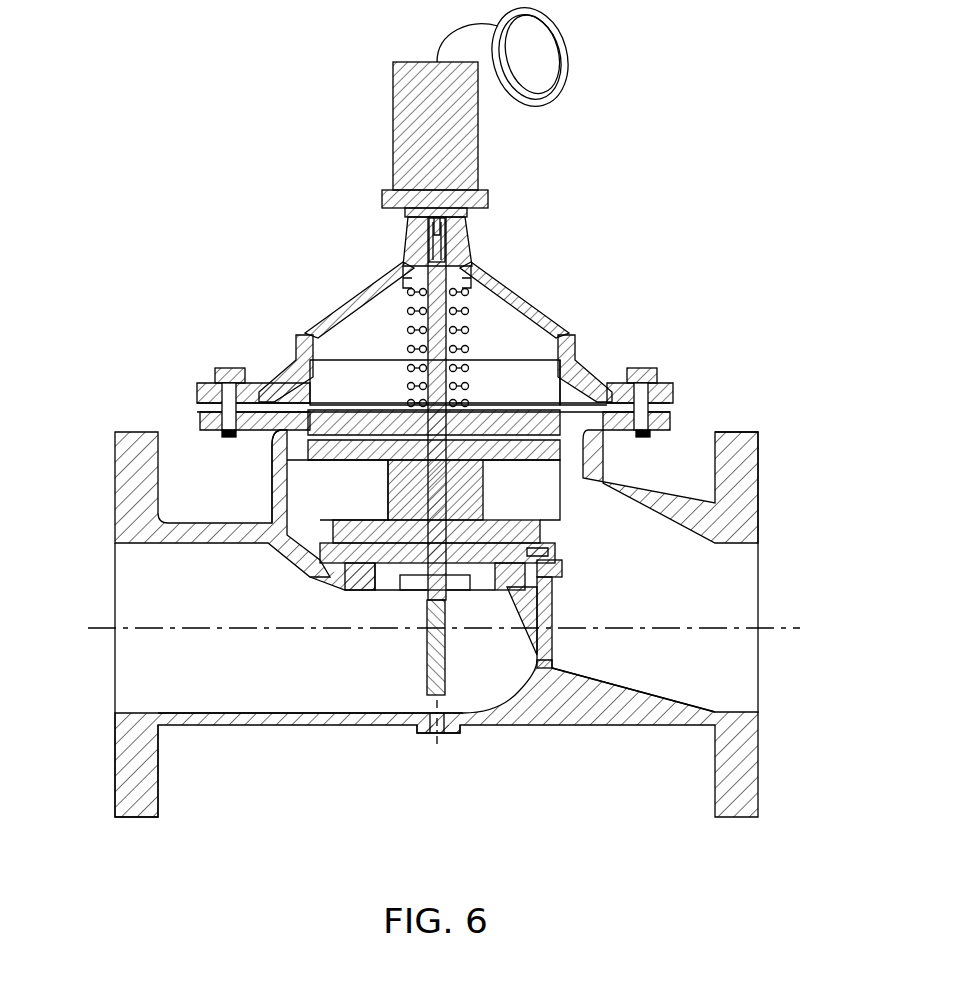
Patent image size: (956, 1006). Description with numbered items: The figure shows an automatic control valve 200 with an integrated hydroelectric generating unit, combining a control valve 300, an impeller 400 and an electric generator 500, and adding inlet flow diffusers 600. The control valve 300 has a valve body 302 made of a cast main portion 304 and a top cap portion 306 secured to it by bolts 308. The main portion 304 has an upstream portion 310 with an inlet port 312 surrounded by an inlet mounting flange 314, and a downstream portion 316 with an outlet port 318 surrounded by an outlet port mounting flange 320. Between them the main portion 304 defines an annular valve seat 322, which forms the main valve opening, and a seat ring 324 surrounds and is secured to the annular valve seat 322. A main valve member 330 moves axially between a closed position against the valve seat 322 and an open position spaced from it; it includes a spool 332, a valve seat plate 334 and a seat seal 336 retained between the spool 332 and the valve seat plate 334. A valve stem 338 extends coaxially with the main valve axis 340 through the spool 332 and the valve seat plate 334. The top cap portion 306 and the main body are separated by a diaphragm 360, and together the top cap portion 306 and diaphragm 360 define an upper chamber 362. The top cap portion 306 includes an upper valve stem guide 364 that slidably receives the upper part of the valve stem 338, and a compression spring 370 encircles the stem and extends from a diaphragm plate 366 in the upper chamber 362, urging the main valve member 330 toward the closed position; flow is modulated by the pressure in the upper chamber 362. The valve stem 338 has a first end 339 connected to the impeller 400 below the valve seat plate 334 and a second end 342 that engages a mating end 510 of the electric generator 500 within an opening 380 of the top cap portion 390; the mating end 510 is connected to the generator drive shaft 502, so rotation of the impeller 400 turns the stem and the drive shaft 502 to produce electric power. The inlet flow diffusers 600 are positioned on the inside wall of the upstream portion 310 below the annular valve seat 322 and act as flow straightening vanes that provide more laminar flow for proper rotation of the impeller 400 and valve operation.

The automatic control valve 200 is at (235, 182).
The control valve 300 is at (115, 460).
The valve body 302 is at (527, 702).
The main portion 304 is at (306, 718).
The top cap portion 306 is at (345, 320).
The bolts 308 is at (232, 366).
The upstream portion 310 is at (228, 718).
The inlet port 312 is at (115, 681).
The inlet mounting flange 314 is at (138, 812).
The downstream portion 316 is at (680, 685).
The outlet port 318 is at (759, 597).
The outlet port mounting flange 320 is at (737, 432).
The annular valve seat 322 is at (553, 566).
The seat ring 324 is at (548, 550).
The main valve member 330 is at (380, 516).
The spool 332 is at (545, 475).
The valve seat plate 334 is at (335, 580).
The seat seal 336 is at (290, 535).
The valve stem 338 is at (460, 510).
The first end 339 is at (452, 600).
The main valve axis 340 is at (432, 736).
The second end 342 is at (468, 268).
The diaphragm 360 is at (613, 383).
The upper chamber 362 is at (535, 335).
The upper valve stem guide 364 is at (417, 275).
The diaphragm plate 366 is at (480, 410).
The compression spring 370 is at (468, 336).
The opening 380 is at (455, 240).
The top cap portion 390 is at (408, 238).
The impeller 400 is at (400, 592).
The electric generator 500 is at (470, 152).
The generator drive shaft 502 is at (450, 213).
The mating end 510 is at (460, 222).
The inlet flow diffusers 600 is at (427, 672).